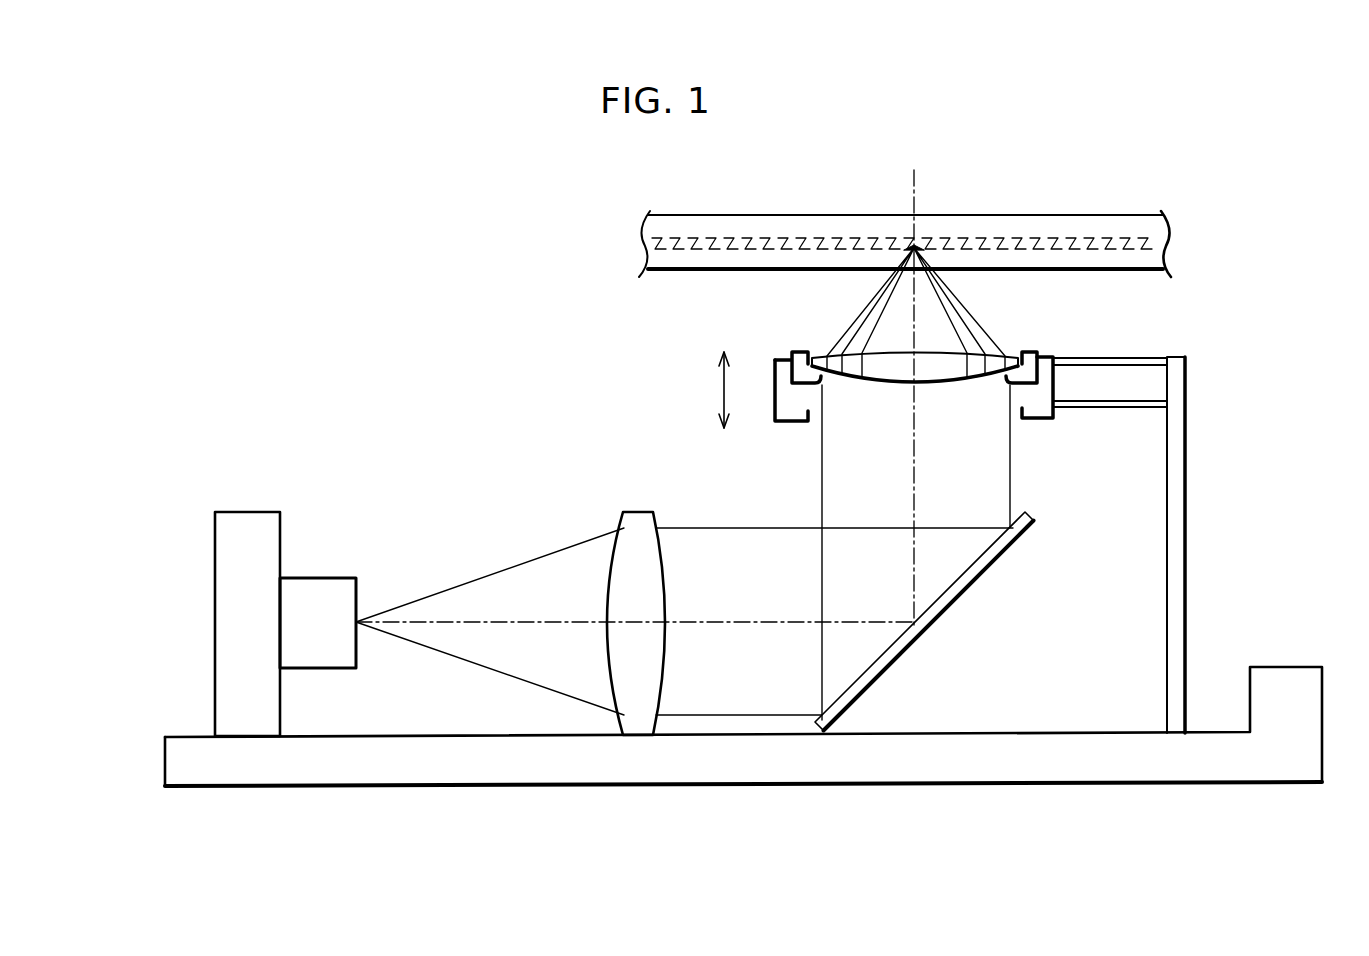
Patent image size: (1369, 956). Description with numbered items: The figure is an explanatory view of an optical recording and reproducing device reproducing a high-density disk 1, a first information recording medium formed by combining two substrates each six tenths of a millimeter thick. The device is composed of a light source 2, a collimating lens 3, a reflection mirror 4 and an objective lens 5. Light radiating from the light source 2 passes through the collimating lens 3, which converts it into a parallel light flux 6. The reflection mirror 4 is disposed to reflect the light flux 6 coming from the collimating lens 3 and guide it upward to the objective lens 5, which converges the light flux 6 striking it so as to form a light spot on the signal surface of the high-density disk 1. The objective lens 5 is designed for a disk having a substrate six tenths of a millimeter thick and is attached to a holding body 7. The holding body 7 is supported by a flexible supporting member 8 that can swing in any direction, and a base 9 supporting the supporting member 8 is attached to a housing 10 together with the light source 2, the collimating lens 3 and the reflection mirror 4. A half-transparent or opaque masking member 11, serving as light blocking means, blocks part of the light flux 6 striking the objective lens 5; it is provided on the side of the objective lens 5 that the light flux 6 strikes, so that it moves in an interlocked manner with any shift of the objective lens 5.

The high-density disk 1 is at (990, 213).
The light source 2 is at (311, 578).
The collimating lens 3 is at (630, 517).
The reflection mirror 4 is at (988, 578).
The objective lens 5 is at (1010, 353).
The light flux 6 is at (762, 716).
The holding body 7 is at (1050, 420).
The supporting member 8 is at (1158, 400).
The base 9 is at (1188, 546).
The housing 10 is at (1083, 768).
The masking member 11 is at (845, 384).